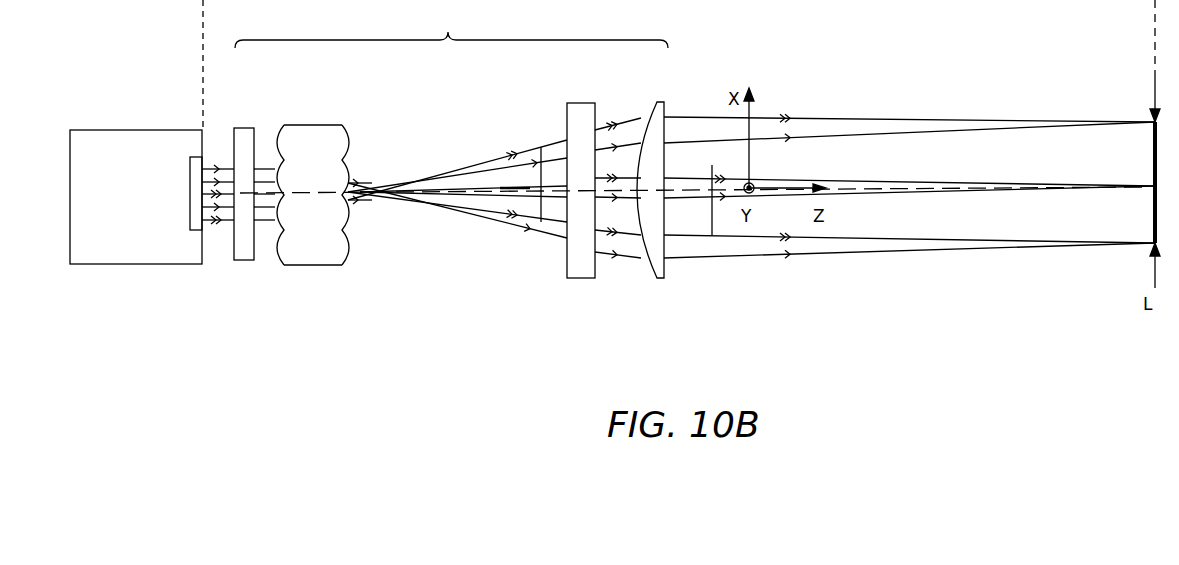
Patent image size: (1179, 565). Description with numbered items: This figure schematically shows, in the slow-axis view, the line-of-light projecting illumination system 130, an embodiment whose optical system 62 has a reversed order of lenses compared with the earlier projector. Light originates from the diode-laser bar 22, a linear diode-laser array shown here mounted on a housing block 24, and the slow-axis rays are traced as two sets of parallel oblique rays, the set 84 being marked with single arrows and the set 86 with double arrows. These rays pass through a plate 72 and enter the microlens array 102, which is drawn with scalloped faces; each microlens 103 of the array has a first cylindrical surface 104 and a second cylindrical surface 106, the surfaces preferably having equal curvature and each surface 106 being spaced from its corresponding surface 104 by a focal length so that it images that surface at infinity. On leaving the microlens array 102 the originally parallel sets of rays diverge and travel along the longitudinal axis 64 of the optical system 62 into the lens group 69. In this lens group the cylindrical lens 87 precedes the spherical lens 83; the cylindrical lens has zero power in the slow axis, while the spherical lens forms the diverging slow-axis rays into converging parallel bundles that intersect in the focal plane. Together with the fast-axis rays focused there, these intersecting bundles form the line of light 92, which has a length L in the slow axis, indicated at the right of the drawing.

The light source housing 24 is at (98, 148).
The diode-laser bar 22 is at (182, 168).
The set of parallel oblique rays 84 is at (215, 147).
The set of parallel oblique rays 86 is at (217, 243).
The optical plate 72 is at (240, 128).
The microlens array 102 is at (314, 282).
The first cylindrical surface 104 is at (290, 140).
The second cylindrical surface 106 is at (350, 138).
The microlens 103 is at (355, 262).
The optical system 62 is at (451, 27).
The cylindrical lens 87 is at (576, 263).
The longitudinal axis 64 is at (606, 195).
The spherical lens 83 is at (655, 118).
The lens group 69 is at (619, 310).
The line of light 92 is at (1140, 217).
The line-of-light projecting illumination system 130 is at (765, 340).